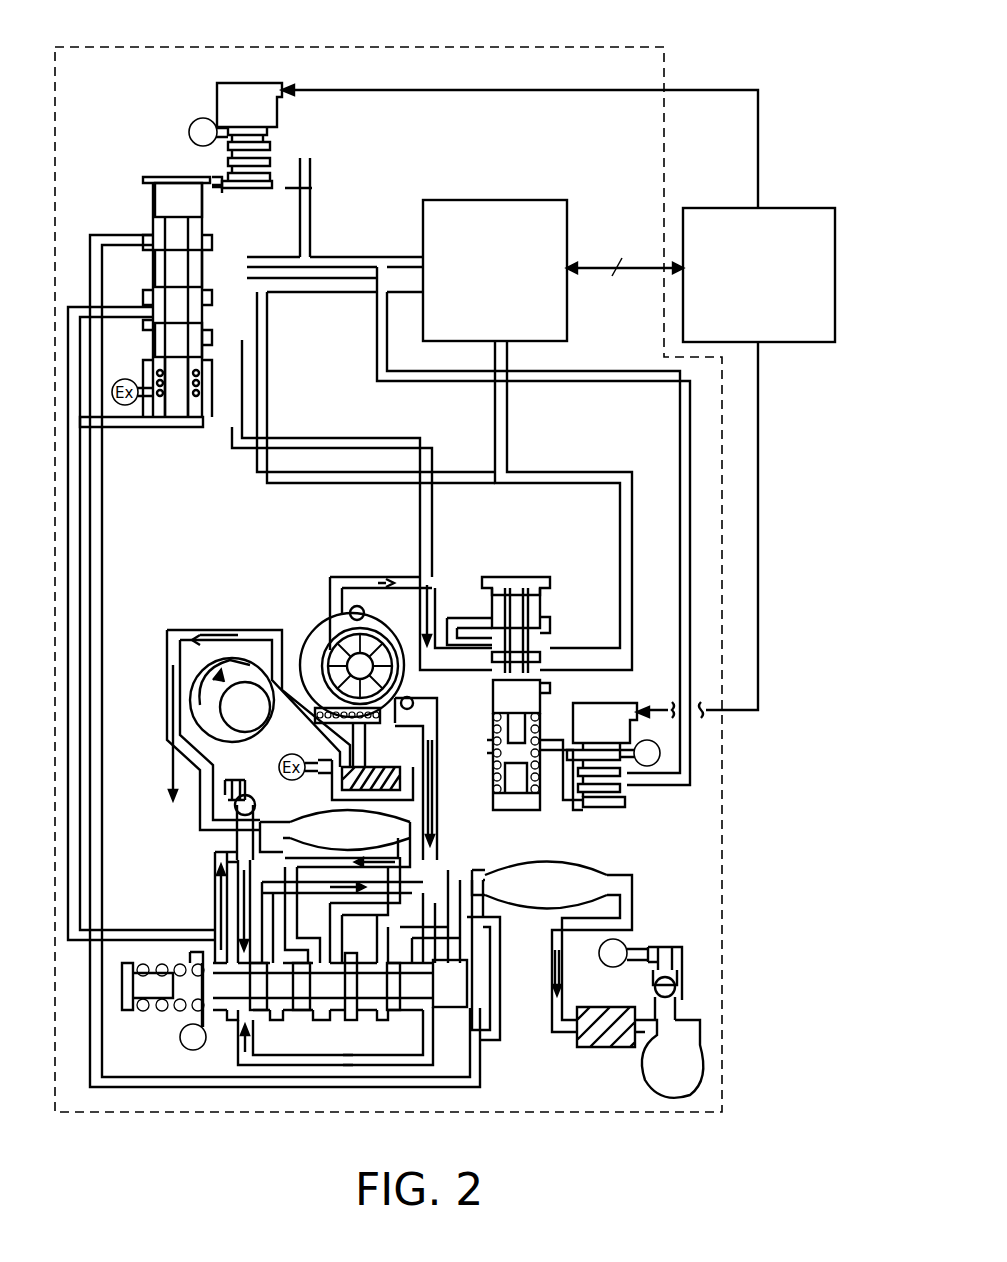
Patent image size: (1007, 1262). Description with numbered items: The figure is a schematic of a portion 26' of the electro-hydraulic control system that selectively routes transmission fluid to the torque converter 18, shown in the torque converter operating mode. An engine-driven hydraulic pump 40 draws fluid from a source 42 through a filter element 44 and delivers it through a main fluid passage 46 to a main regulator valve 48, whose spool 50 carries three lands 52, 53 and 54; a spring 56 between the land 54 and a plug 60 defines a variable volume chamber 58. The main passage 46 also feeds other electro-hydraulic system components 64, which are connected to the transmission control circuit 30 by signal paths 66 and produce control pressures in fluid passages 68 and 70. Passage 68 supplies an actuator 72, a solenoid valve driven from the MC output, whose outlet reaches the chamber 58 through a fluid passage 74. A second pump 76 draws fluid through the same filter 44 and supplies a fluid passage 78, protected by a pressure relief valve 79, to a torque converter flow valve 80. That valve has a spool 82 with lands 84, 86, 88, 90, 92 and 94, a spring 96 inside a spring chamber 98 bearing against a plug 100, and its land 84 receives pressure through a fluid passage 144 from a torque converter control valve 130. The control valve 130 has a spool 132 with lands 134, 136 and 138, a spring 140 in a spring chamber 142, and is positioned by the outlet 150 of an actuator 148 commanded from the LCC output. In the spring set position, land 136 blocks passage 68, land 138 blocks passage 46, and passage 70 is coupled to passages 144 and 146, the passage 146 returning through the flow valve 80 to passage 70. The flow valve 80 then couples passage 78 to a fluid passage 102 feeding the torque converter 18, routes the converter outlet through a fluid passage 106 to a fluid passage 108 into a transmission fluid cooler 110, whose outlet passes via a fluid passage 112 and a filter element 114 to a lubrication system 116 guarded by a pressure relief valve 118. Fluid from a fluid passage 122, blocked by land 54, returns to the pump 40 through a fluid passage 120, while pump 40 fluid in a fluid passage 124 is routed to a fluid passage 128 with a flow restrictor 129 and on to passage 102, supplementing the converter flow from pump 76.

The torque converter 18 is at (335, 838).
The portion of the electro-hydraulic control system 26' is at (388, 556).
The transmission control circuit 30 is at (793, 208).
The hydraulic pump 40 is at (318, 630).
The source of transmission fluid 42 is at (417, 767).
The filter element 44 is at (360, 770).
The main fluid passage 46 is at (558, 472).
The main regulator valve 48 is at (542, 668).
The spool 50 is at (502, 602).
The land 52 is at (542, 597).
The land 53 is at (543, 657).
The land 54 is at (521, 696).
The spring 56 is at (542, 715).
The variable volume chamber 58 is at (520, 748).
The plug 60 is at (525, 805).
The other electro-hydraulic system components 64 is at (525, 200).
The signal paths 66 is at (632, 272).
The fluid passage 68 is at (357, 257).
The fluid passage 70 is at (335, 294).
The actuator 72 is at (620, 703).
The fluid passage 74 is at (600, 807).
The hydraulic pump 76 is at (250, 640).
The fluid passage 78 is at (190, 630).
The pressure relief valve 79 is at (255, 795).
The torque converter flow valve 80 is at (335, 1012).
The spool 82 is at (477, 983).
The land 84 is at (450, 983).
The land 86 is at (395, 1012).
The land 88 is at (345, 1012).
The land 90 is at (300, 1010).
The land 92 is at (258, 1012).
The land 94 is at (205, 960).
The spring 96 is at (165, 1012).
The spring chamber 98 is at (182, 965).
The plug 100 is at (128, 1010).
The fluid passage 102 is at (213, 857).
The fluid passage 106 is at (425, 852).
The fluid passage 108 is at (352, 896).
The transmission fluid cooler 110 is at (539, 885).
The fluid passage 112 is at (633, 897).
The filter element 114 is at (600, 1047).
The lubrication system 116 is at (678, 1085).
The pressure relief valve 118 is at (682, 975).
The fluid passage 120 is at (440, 872).
The fluid passage 122 is at (503, 1030).
The fluid passage 124 is at (467, 617).
The fluid passage 128 is at (433, 1062).
The flow restrictor 129 is at (370, 1066).
The torque converter control valve 130 is at (128, 148).
The spool 132 is at (175, 176).
The land 134 is at (178, 200).
The land 136 is at (178, 268).
The land 138 is at (178, 340).
The spring 140 is at (345, 434).
The spring chamber 142 is at (197, 363).
The fluid passage 144 is at (103, 235).
The fluid passage 146 is at (82, 472).
The actuator 148 is at (217, 86).
The outlet 150 is at (245, 190).